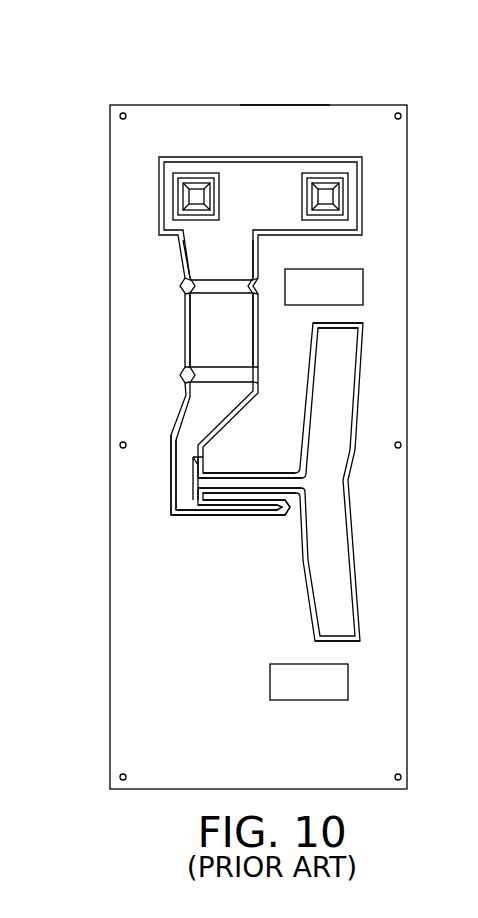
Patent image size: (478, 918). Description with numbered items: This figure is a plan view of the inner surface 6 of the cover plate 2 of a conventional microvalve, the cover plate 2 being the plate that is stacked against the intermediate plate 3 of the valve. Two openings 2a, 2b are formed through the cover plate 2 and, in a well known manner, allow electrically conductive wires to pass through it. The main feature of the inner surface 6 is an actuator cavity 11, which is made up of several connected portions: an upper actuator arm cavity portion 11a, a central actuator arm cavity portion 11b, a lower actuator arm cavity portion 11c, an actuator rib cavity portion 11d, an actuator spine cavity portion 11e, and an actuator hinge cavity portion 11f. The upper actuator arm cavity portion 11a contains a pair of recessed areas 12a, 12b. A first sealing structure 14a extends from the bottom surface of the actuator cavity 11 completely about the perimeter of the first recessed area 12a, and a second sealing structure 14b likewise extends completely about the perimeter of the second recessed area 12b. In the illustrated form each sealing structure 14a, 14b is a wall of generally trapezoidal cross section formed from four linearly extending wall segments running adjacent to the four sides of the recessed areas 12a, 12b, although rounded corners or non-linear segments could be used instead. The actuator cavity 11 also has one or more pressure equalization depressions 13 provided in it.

The cover plate 2 is at (263, 105).
The opening 2a is at (328, 303).
The opening 2b is at (323, 700).
The intermediate plate 3 is at (474, 171).
The inner surface 6 is at (287, 115).
The actuator cavity 11 is at (254, 186).
The upper actuator arm cavity portion 11a is at (208, 253).
The central actuator arm cavity portion 11b is at (210, 337).
The lower actuator arm cavity portion 11c is at (187, 497).
The actuator rib cavity portion 11d is at (337, 353).
The actuator spine cavity portion 11e is at (257, 473).
The actuator hinge cavity portion 11f is at (229, 515).
The first recessed area 12a is at (193, 200).
The second recessed area 12b is at (330, 198).
The pressure equalization depression 13 is at (213, 303).
The first sealing structure 14a is at (197, 175).
The second sealing structure 14b is at (325, 175).